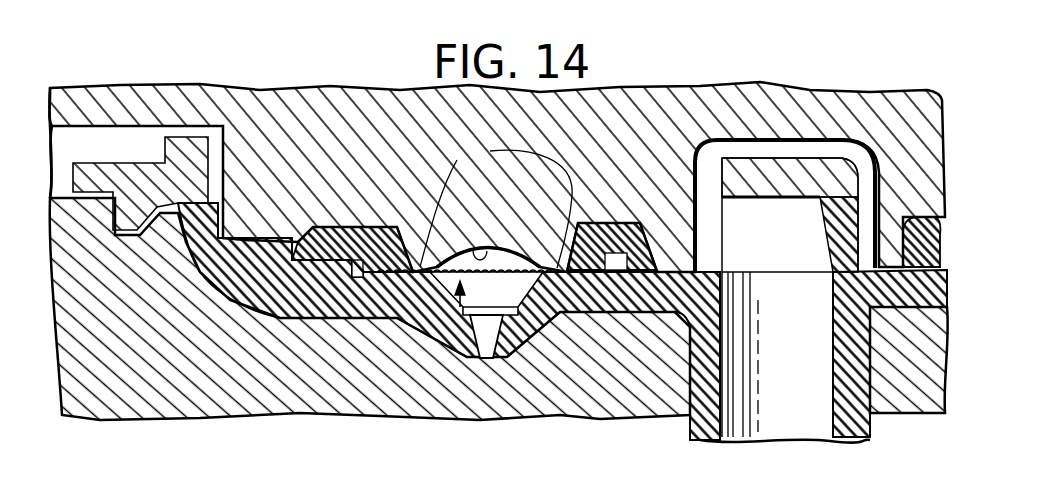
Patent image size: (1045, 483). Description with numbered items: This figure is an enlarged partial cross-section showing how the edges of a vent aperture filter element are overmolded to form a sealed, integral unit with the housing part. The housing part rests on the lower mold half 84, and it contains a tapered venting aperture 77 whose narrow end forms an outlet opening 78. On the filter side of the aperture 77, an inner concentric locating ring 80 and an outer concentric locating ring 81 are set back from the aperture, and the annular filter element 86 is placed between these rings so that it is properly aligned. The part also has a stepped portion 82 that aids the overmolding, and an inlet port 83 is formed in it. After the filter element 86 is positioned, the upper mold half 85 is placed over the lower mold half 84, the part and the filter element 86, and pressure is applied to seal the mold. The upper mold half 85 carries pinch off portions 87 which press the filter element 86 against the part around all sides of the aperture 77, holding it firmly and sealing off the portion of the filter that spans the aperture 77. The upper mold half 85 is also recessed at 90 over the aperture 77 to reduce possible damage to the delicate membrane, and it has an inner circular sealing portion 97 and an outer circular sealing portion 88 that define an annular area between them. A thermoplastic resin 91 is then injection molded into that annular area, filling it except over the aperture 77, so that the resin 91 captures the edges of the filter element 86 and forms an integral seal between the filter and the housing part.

The tapered venting aperture 77 is at (460, 308).
The outlet opening 78 is at (490, 358).
The inner concentric locating ring 80 is at (618, 272).
The outer concentric locating ring 81 is at (352, 280).
The stepped portion 82 is at (430, 324).
The inlet port 83 is at (697, 432).
The lower mold half 84 is at (340, 380).
The upper mold half 85 is at (323, 100).
The annular filter element 86 is at (508, 275).
The pinch off portion 87 is at (496, 201).
The outer circular sealing portion 88 is at (258, 230).
The recess 90 is at (480, 257).
The thermoplastic resin 91 is at (332, 230).
The inner circular sealing portion 97 is at (673, 263).